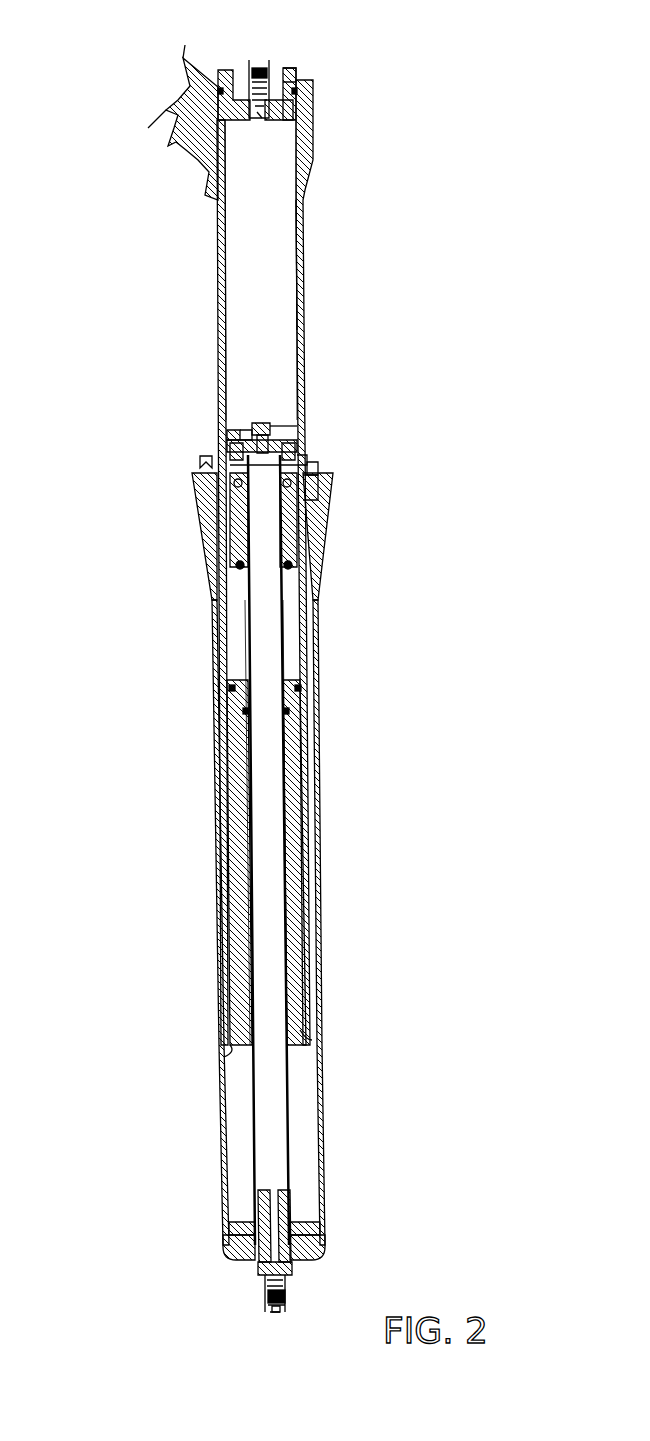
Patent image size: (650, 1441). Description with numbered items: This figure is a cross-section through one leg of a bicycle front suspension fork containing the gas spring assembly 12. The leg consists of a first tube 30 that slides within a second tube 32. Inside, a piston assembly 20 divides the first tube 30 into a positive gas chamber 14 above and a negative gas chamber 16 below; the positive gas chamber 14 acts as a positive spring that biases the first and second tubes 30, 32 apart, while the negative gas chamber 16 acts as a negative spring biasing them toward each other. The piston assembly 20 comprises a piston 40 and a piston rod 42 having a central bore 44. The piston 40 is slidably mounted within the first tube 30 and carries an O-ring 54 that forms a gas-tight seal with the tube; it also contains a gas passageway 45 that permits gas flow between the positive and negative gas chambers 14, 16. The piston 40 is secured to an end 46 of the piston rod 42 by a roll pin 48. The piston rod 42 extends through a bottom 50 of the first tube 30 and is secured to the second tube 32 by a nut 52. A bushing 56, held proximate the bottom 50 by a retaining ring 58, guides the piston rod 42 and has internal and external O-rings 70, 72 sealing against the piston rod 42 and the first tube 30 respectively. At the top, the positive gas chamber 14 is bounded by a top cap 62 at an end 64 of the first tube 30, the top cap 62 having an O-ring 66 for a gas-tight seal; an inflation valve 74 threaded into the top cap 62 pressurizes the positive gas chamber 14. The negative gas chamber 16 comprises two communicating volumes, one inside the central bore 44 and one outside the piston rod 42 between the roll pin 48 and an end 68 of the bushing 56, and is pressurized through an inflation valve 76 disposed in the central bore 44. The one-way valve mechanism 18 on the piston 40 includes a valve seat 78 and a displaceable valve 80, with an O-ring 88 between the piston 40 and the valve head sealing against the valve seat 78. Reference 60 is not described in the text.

The gas spring assembly 12 is at (308, 240).
The positive gas chamber 14 is at (248, 277).
The negative gas chamber 16 is at (258, 647).
The one-way valve mechanism 18 is at (240, 422).
The piston assembly 20 is at (202, 458).
The first tube 30 is at (303, 318).
The second tube 32 is at (320, 1095).
The piston 40 is at (232, 445).
The piston rod 42 is at (283, 600).
The central bore 44 is at (262, 675).
The gas passageway 45 is at (300, 462).
The end of the piston rod 46 is at (232, 490).
The roll pin 48 is at (300, 470).
The bottom of the first tube 50 is at (310, 1040).
The nut 52 is at (290, 1262).
The O-ring 54 is at (297, 445).
The bushing 56 is at (300, 955).
The retaining ring 58 is at (225, 1060).
The ring 60 is at (227, 431).
The top cap 62 is at (288, 70).
The end of the first tube 64 is at (303, 100).
The O-ring 66 is at (296, 92).
The end of the bushing 68 is at (300, 683).
The internal O-ring 70 is at (310, 745).
The external O-ring 72 is at (305, 703).
The inflation valve 74 is at (258, 62).
The inflation valve 76 is at (278, 1308).
The valve seat 78 is at (300, 425).
The valve 80 is at (268, 420).
The O-ring 88 is at (283, 428).